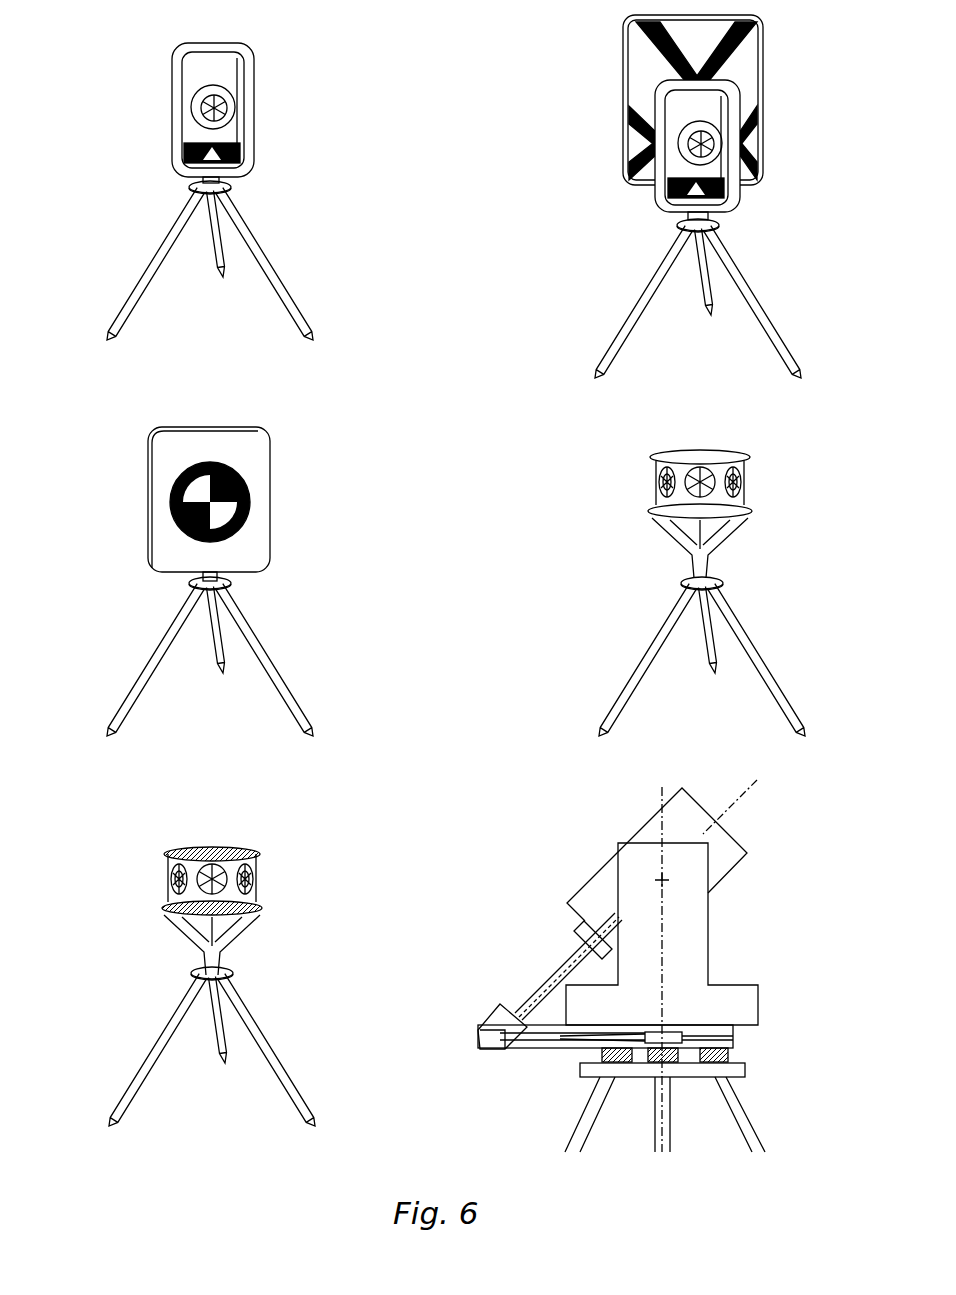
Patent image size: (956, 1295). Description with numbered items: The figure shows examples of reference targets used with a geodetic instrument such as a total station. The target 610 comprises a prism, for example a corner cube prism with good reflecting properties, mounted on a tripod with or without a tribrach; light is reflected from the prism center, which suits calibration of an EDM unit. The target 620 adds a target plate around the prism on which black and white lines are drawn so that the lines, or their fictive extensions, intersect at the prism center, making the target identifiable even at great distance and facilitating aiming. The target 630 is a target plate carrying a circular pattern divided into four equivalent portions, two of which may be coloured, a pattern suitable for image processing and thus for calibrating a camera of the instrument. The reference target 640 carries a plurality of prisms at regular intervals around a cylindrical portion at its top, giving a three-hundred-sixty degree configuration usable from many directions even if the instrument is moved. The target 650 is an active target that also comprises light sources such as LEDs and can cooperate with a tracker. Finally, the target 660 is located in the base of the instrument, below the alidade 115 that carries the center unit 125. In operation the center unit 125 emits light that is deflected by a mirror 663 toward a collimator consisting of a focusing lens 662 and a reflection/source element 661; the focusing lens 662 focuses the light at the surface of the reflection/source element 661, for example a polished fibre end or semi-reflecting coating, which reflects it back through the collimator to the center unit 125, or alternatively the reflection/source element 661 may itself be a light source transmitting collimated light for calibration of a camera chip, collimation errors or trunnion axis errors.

The target 610 is at (189, 178).
The target 620 is at (662, 195).
The target 630 is at (177, 560).
The reference target 640 is at (682, 571).
The target 650 is at (196, 969).
The target 660 is at (594, 966).
The center unit 125 is at (690, 818).
The alidade 115 is at (708, 942).
The reflection/source element 661 is at (733, 1031).
The focusing lens 662 is at (560, 1053).
The mirror 663 is at (480, 1050).